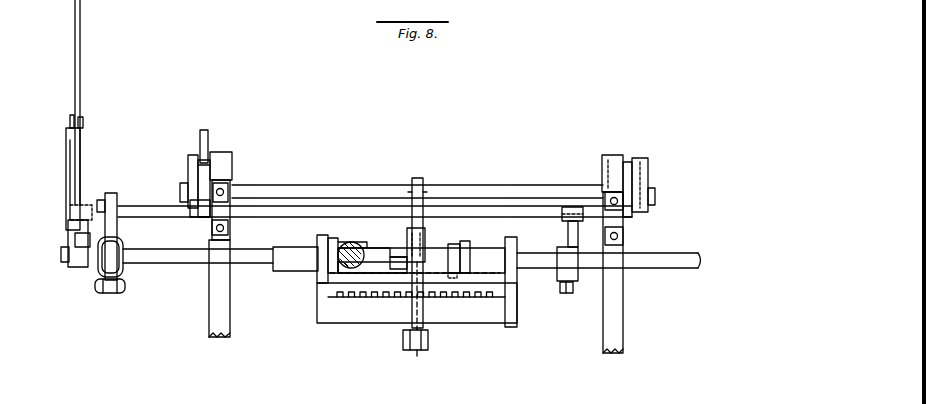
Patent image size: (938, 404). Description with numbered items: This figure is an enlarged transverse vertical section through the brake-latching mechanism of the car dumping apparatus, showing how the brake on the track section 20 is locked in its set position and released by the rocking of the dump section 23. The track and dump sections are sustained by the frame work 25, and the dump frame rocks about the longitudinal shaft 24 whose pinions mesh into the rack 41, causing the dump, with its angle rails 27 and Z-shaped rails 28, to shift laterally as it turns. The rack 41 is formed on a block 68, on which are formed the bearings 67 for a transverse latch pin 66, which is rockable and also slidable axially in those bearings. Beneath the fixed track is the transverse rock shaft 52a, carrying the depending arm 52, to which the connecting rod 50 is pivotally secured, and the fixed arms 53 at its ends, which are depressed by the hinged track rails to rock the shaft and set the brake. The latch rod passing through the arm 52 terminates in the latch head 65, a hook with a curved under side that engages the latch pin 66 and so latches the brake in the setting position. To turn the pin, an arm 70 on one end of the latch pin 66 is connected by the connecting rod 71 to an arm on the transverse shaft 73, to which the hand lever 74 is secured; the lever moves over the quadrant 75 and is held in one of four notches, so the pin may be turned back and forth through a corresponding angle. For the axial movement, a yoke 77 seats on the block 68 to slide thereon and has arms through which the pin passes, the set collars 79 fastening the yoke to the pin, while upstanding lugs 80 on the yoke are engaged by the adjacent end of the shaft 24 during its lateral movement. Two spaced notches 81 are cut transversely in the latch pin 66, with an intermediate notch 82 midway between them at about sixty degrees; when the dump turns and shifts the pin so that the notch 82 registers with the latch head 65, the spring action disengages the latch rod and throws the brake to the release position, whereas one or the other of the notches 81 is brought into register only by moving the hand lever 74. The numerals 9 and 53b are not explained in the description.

The shaft 9 is at (285, 245).
The track section 20 is at (226, 152).
The dump section 23 is at (250, 186).
The longitudinal shaft 24 is at (360, 249).
The frame work 25 is at (624, 341).
The angle rails 27 is at (638, 160).
The Z-shaped rails 28 is at (204, 133).
The rack 41 is at (323, 294).
The connecting rod 50 is at (430, 347).
The depending arm 52 is at (416, 353).
The transverse rock shaft 52a is at (492, 188).
The fixed arms 53 is at (184, 190).
The stud 53b is at (656, 198).
The latch head 65 is at (420, 240).
The latch pin 66 is at (282, 268).
The bearings 67 is at (318, 238).
The block 68 is at (497, 318).
The arm 70 is at (569, 262).
The connecting rod 71 is at (578, 212).
The transverse shaft 73 is at (194, 256).
The hand lever 74 is at (81, 98).
The quadrant 75 is at (72, 160).
The yoke 77 is at (445, 280).
The set collars 79 is at (351, 242).
The upstanding lugs 80 is at (333, 240).
The notches 81 is at (432, 234).
The intermediate notch 82 is at (400, 262).